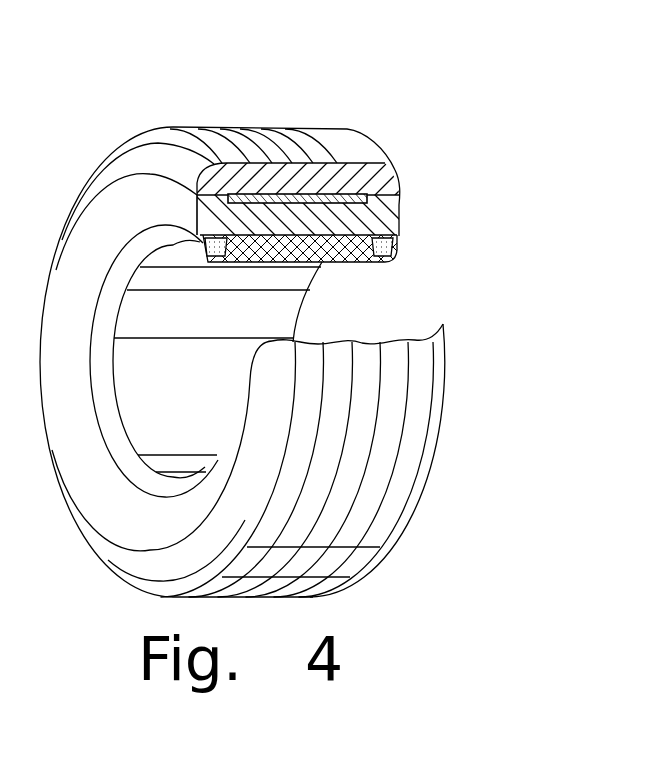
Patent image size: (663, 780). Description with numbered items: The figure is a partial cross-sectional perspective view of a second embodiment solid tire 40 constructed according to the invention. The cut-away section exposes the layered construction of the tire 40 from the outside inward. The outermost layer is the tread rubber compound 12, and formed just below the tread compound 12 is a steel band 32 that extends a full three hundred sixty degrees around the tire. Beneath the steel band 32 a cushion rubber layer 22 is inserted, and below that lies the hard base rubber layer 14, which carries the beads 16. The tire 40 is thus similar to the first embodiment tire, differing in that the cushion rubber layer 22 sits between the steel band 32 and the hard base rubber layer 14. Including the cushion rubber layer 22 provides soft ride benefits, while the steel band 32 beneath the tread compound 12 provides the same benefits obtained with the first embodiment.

The second embodiment solid tire 40 is at (468, 63).
The tread rubber compound 12 is at (376, 172).
The cushion rubber layer 22 is at (388, 212).
The steel band 32 is at (356, 196).
The hard base rubber layer 14 is at (398, 242).
The beads 16 is at (388, 257).